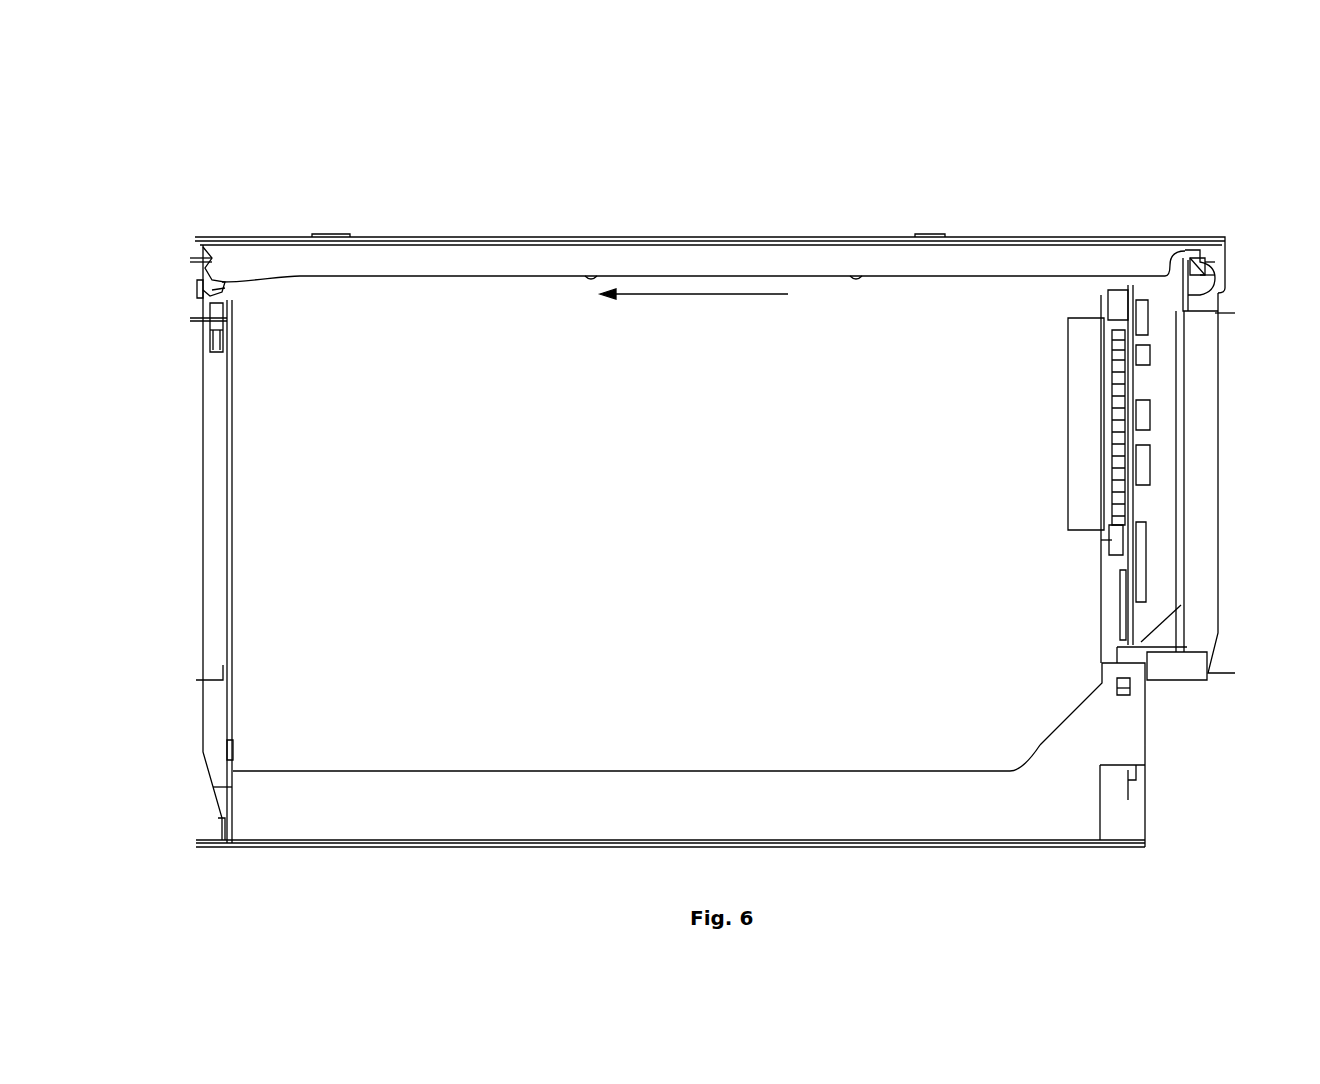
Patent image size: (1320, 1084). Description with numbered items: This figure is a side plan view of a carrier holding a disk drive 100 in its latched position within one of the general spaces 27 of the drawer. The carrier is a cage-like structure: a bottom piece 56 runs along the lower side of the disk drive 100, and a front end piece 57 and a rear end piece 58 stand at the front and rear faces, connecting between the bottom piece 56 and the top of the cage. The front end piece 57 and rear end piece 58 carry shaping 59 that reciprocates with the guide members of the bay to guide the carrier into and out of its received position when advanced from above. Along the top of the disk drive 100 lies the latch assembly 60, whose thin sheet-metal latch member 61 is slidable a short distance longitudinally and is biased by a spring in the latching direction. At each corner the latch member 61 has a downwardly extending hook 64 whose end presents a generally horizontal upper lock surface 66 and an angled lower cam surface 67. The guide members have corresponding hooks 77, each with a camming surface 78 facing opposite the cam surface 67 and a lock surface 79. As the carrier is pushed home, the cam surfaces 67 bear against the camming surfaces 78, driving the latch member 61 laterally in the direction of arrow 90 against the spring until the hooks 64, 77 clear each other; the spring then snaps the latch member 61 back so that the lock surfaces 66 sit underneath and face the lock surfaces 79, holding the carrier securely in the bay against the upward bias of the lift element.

The general space 27 is at (1207, 476).
The bottom piece 56 is at (851, 817).
The front end piece 57 is at (212, 522).
The rear end piece 58 is at (1125, 730).
The shaping 59 is at (213, 612).
The latch assembly 60 is at (878, 236).
The latch member 61 is at (515, 255).
The hook 64 is at (222, 290).
The lock surface 66 is at (172, 252).
The cam surface 67 is at (208, 298).
The hook 77 is at (287, 255).
The camming surface 78 is at (230, 252).
The lock surface 79 is at (1182, 290).
The arrow 90 is at (694, 313).
The disk drive 100 is at (529, 633).